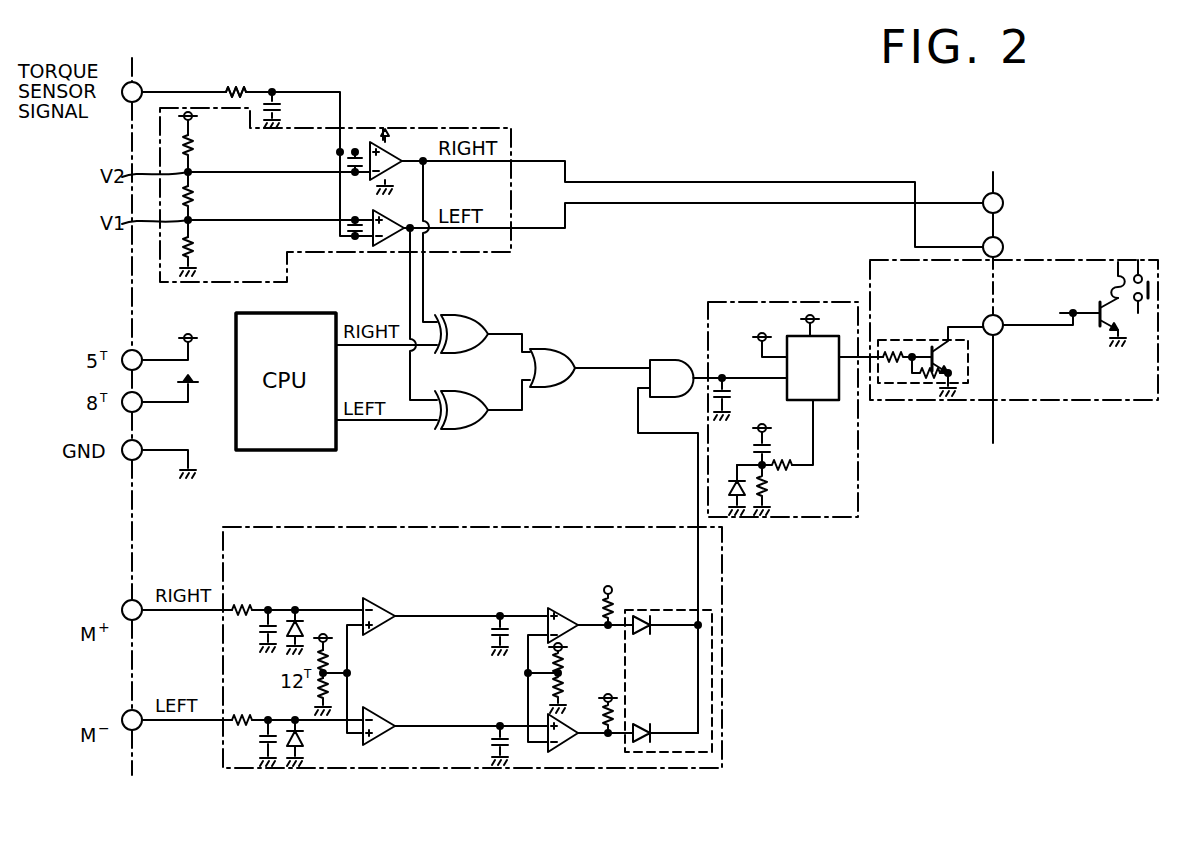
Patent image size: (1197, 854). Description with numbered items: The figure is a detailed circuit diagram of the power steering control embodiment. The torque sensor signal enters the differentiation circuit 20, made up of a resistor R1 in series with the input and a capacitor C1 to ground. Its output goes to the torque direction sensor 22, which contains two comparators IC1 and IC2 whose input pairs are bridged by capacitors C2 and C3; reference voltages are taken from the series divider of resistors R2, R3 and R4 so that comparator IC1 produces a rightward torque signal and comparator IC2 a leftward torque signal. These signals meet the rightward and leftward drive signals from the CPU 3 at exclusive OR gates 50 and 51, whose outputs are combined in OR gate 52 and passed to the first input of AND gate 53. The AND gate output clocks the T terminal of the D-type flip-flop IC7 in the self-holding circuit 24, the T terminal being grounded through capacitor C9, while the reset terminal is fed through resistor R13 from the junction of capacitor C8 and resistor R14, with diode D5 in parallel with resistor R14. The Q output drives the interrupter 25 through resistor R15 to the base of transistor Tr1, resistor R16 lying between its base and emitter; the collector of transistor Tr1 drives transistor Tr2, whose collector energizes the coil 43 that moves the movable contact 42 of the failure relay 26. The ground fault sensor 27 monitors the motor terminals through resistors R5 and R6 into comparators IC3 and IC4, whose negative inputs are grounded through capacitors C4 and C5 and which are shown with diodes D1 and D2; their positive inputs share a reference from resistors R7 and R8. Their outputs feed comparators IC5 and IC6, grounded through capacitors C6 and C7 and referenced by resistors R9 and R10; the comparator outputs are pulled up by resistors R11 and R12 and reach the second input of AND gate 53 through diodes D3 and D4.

The differentiation circuit 20 is at (301, 83).
The torque direction sensor 22 is at (512, 130).
The self-holding circuit 24 is at (775, 302).
The interrupter 25 is at (970, 402).
The failure relay 26 is at (1143, 272).
The ground fault sensor 27 is at (436, 527).
The CPU 3 is at (283, 452).
The exclusive OR gate 50 is at (455, 316).
The exclusive OR gate 51 is at (458, 393).
The OR gate 52 is at (545, 350).
The AND gate 53 is at (677, 358).
The movable contact 42 is at (1150, 288).
The coil 43 is at (1108, 290).
The resistor R1 is at (238, 81).
The resistor R2 is at (203, 160).
The resistor R3 is at (203, 211).
The resistor R4 is at (201, 256).
The resistor R5 is at (245, 597).
The resistor R6 is at (245, 707).
The resistor R7 is at (333, 657).
The resistor R8 is at (333, 687).
The resistor R9 is at (566, 657).
The resistor R10 is at (566, 687).
The resistor R11 is at (630, 605).
The resistor R12 is at (620, 716).
The resistor R13 is at (780, 471).
The resistor R14 is at (774, 490).
The resistor R15 is at (898, 347).
The resistor R16 is at (928, 383).
The capacitor C1 is at (288, 108).
The capacitor C2 is at (348, 160).
The capacitor C3 is at (348, 228).
The capacitor C4 is at (262, 632).
The capacitor C5 is at (260, 740).
The capacitor C6 is at (491, 634).
The capacitor C7 is at (492, 746).
The capacitor C8 is at (743, 444).
The capacitor C9 is at (737, 397).
The diode D1 is at (313, 632).
The diode D2 is at (313, 743).
The diode D3 is at (664, 638).
The diode D4 is at (642, 748).
The diode D5 is at (728, 490).
The comparator IC1 is at (399, 161).
The comparator IC2 is at (394, 218).
The comparator IC3 is at (455, 607).
The comparator IC4 is at (399, 716).
The comparator IC5 is at (579, 663).
The comparator IC6 is at (566, 750).
The D-type flip-flop IC7 is at (818, 390).
The transistor Tr1 is at (962, 367).
The transistor Tr2 is at (1064, 331).